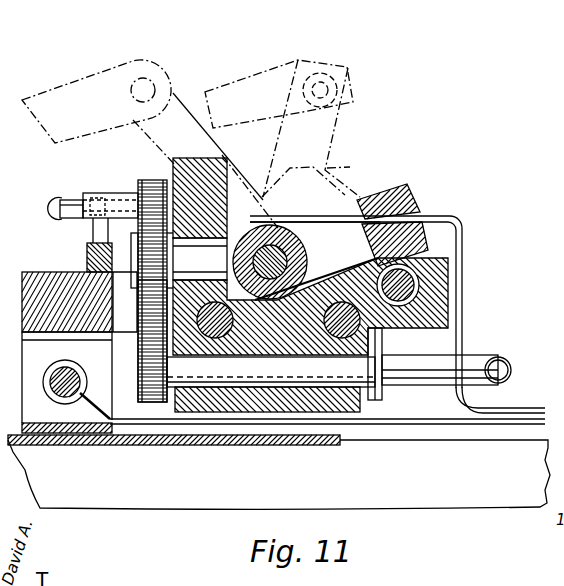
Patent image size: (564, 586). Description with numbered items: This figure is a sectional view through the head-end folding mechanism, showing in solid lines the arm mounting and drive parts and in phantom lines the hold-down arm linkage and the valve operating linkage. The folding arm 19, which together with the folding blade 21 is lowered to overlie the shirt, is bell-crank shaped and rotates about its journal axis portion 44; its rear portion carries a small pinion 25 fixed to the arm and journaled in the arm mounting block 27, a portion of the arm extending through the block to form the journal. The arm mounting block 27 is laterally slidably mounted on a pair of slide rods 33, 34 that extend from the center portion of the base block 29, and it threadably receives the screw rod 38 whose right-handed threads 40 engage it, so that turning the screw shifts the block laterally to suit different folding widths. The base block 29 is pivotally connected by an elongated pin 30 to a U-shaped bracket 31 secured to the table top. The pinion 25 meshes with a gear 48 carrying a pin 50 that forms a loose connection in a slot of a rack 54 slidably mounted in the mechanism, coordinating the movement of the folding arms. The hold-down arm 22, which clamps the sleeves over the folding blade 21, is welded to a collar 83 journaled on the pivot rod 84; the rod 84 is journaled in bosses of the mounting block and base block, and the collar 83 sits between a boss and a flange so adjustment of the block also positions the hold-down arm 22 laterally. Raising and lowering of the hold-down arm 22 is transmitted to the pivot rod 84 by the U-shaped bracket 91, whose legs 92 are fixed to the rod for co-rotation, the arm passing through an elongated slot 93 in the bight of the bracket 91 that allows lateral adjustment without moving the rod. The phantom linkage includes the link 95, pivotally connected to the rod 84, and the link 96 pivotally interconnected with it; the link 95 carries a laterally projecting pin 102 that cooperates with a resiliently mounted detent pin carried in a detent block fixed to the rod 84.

The folding arm 19 is at (491, 356).
The folding blade 21 is at (425, 424).
The hold-down arm 22 is at (456, 224).
The pinion 25 is at (155, 395).
The arm mounting block 27 is at (437, 297).
The base block 29 is at (47, 272).
The elongated pin 30 is at (84, 430).
The U-shaped bracket 31 is at (41, 428).
The slide rod 33 is at (376, 332).
The slide rod 34 is at (222, 338).
The screw rod 38 is at (418, 272).
The right-handed threads 40 is at (414, 284).
The journal axis portion 44 is at (292, 395).
The gear 48 is at (148, 180).
The pin 50 is at (90, 197).
The rack 54 is at (60, 216).
The collar 83 is at (302, 236).
The pivot rod 84 is at (280, 259).
The U-shaped bracket 91 is at (407, 184).
The legs 92 is at (355, 196).
The slot 93 is at (422, 212).
The link 95 is at (198, 142).
The link 96 is at (70, 87).
The pin 102 is at (214, 155).